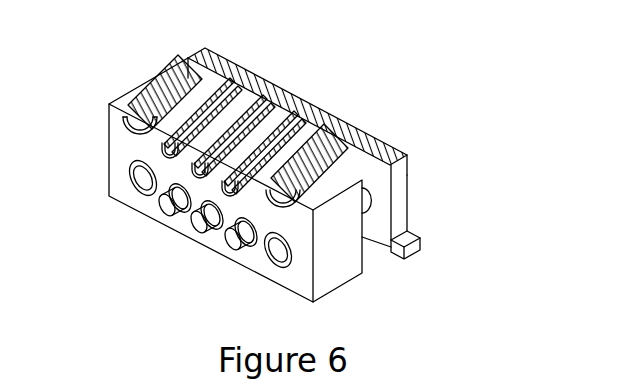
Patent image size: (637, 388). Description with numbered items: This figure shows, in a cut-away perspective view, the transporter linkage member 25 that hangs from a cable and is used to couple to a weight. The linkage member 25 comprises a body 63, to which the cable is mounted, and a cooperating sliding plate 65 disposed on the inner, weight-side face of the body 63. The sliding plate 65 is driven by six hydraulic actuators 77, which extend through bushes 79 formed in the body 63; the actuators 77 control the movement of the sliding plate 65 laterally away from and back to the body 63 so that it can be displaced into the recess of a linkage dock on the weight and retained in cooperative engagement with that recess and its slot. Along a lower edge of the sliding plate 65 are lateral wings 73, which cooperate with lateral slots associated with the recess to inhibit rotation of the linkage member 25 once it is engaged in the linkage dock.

The linkage member 25 is at (438, 117).
The body 63 is at (332, 282).
The sliding plate 65 is at (399, 180).
The lateral wings 73 is at (412, 256).
The hydraulic actuators 77 is at (190, 81).
The bushes 79 is at (140, 120).